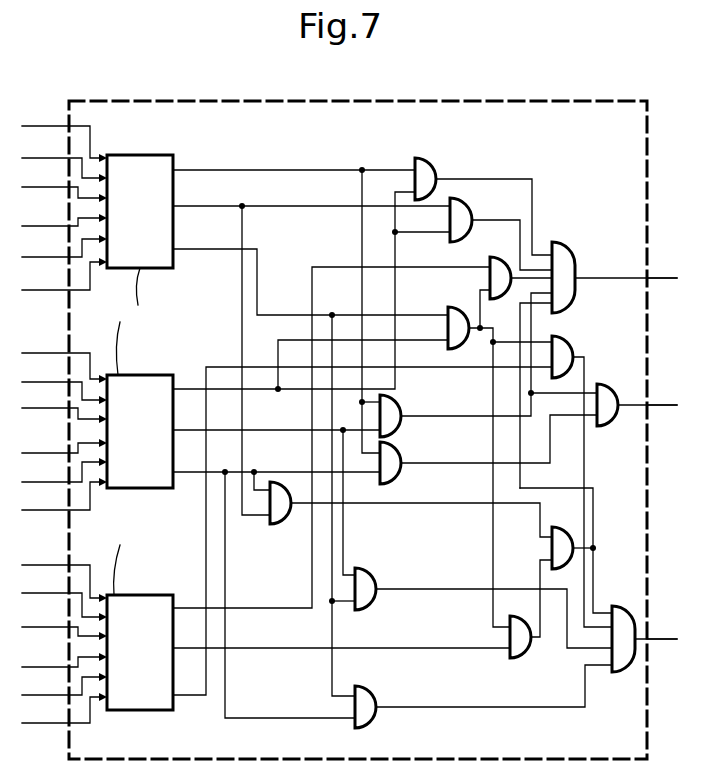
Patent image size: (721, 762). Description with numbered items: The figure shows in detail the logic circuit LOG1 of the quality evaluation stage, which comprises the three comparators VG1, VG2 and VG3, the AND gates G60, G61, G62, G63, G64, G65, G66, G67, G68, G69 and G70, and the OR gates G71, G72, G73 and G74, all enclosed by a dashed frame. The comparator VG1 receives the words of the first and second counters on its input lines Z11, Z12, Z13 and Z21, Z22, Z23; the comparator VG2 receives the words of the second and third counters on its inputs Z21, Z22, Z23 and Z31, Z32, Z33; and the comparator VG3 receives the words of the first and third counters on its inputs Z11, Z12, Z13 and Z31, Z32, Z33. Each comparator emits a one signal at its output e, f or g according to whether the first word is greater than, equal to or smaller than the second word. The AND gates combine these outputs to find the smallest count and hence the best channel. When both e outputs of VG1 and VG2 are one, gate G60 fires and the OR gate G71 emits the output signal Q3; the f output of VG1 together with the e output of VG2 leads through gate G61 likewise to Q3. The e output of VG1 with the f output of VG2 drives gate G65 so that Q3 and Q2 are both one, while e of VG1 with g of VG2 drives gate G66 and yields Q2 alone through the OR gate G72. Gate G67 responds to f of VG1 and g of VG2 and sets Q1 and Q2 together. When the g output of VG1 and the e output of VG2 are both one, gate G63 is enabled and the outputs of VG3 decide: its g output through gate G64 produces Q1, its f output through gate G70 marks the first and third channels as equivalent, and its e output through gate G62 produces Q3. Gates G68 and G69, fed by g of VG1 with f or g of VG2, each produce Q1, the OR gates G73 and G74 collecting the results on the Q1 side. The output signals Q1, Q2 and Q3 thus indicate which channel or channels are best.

The logic circuit LOG1 is at (610, 100).
The comparator VG1 is at (131, 140).
The comparator VG2 is at (131, 362).
The comparator VG3 is at (131, 580).
The input signal Z11 is at (64, 351).
The input signal Z12 is at (64, 377).
The input signal Z13 is at (64, 401).
The input signal Z21 is at (64, 292).
The input signal Z22 is at (64, 318).
The input signal Z23 is at (64, 340).
The input signal Z31 is at (64, 549).
The input signal Z32 is at (64, 577).
The input signal Z33 is at (64, 602).
The comparator output e is at (331, 380).
The comparator output f is at (341, 417).
The comparator output g is at (362, 472).
The AND gate G60 is at (428, 165).
The AND gate G61 is at (462, 206).
The AND gate G62 is at (494, 258).
The AND gate G63 is at (455, 307).
The AND gate G64 is at (566, 344).
The AND gate G65 is at (397, 401).
The AND gate G66 is at (397, 450).
The AND gate G67 is at (284, 524).
The AND gate G68 is at (372, 574).
The AND gate G69 is at (372, 694).
The AND gate G70 is at (527, 605).
The OR gate G71 is at (565, 250).
The OR gate G72 is at (618, 400).
The OR gate G73 is at (568, 535).
The OR gate G74 is at (630, 608).
The output signal Q1 is at (664, 628).
The output signal Q2 is at (664, 394).
The output signal Q3 is at (664, 271).